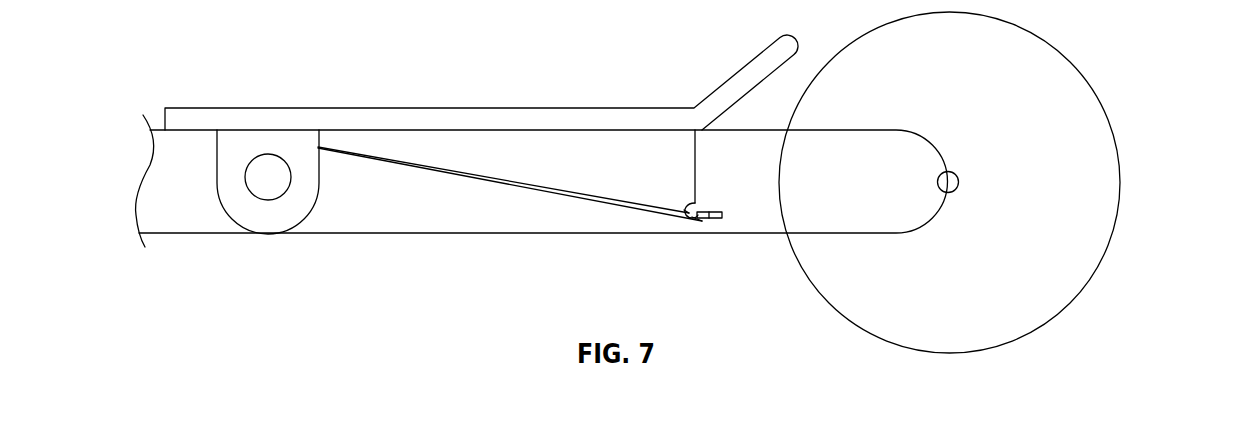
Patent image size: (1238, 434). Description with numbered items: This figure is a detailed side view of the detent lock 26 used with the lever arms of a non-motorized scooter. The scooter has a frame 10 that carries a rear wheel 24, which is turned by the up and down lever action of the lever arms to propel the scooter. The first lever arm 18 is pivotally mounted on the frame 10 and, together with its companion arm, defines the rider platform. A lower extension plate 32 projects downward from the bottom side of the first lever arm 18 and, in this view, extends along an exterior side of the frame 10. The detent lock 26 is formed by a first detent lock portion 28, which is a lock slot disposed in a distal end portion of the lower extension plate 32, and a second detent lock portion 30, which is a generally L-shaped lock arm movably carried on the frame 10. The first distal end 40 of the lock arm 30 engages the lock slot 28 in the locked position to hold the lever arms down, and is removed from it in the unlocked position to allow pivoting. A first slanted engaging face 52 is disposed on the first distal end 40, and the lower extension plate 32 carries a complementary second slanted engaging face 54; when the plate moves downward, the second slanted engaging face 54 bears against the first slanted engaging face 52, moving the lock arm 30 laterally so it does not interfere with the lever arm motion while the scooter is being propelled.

The frame 10 is at (365, 217).
The first lever arm 18 is at (443, 120).
The rear wheel 24 is at (1087, 112).
The detent lock 26 is at (705, 186).
The first detent lock portion 28 is at (685, 207).
The second detent lock portion 30 is at (715, 218).
The lower extension plate 32 is at (563, 175).
The first distal end 40 is at (701, 206).
The first slanted engaging face 52 is at (684, 210).
The second slanted engaging face 54 is at (692, 218).